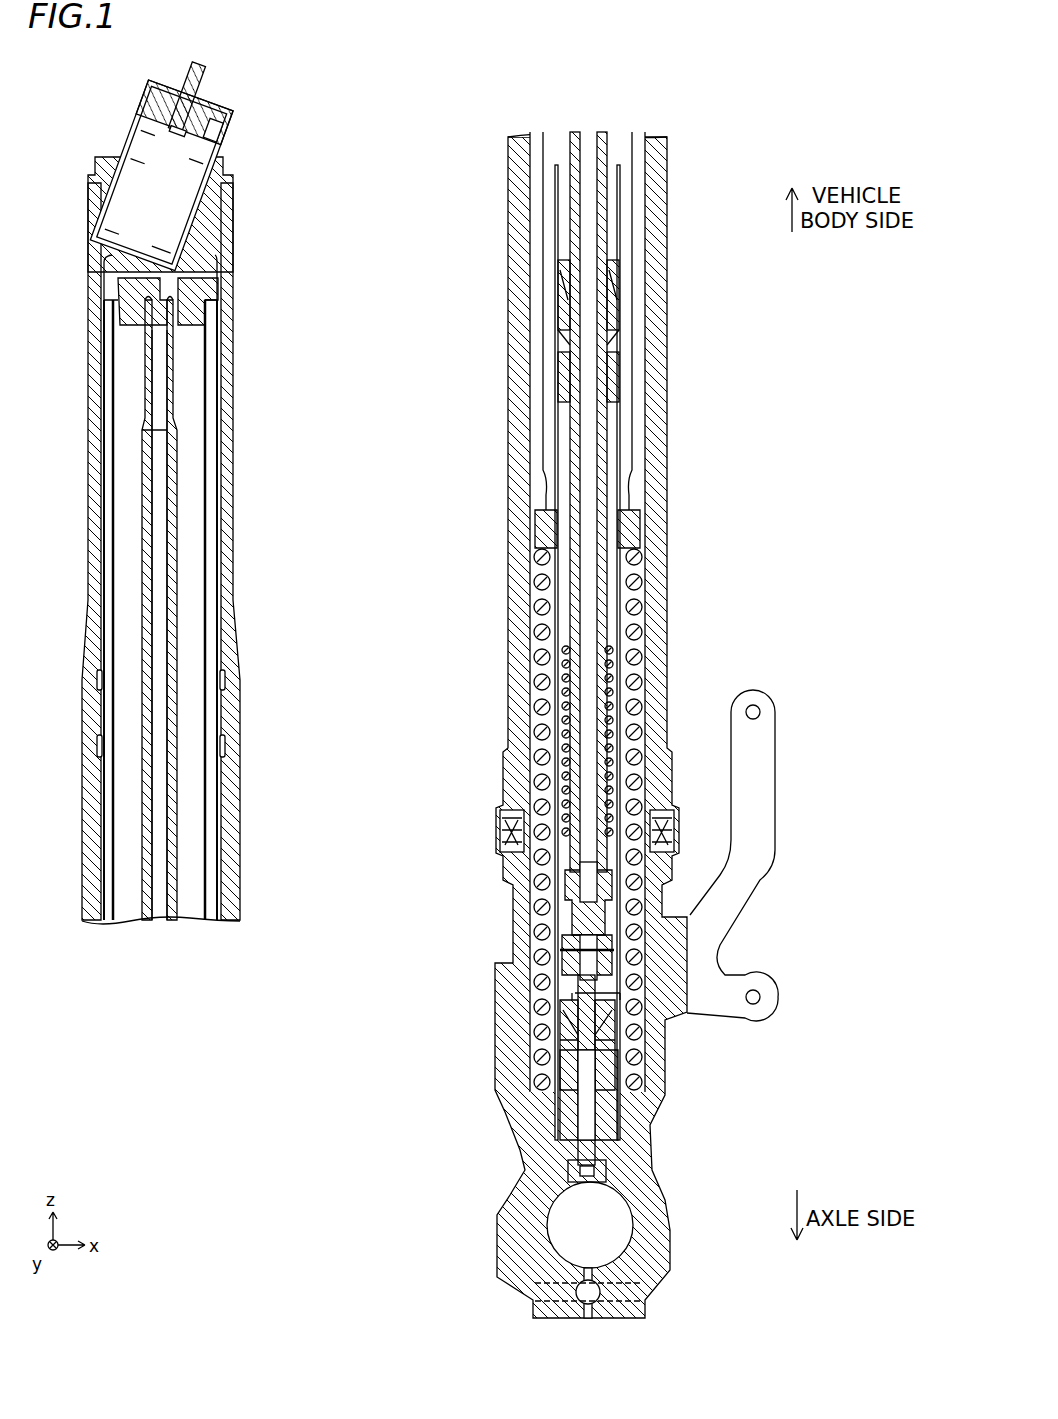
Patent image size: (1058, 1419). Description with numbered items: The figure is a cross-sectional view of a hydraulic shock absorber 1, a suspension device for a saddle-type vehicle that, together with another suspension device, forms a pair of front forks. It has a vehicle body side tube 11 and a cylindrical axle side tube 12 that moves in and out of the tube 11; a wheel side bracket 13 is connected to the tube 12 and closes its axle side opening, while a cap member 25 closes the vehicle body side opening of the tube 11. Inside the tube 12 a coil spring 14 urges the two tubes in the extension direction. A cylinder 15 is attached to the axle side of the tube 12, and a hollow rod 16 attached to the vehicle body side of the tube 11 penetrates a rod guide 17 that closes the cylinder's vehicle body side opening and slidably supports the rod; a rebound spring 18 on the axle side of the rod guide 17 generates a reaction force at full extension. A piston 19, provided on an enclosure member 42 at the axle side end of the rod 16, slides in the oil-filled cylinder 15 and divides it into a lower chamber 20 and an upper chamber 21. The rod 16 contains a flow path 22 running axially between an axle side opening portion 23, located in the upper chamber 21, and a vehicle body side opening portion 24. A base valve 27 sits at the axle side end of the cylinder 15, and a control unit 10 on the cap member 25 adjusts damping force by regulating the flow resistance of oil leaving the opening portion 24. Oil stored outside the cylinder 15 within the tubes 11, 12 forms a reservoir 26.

The hydraulic shock absorber 1 is at (777, 112).
The control unit 10 is at (112, 116).
The vehicle body side tube 11 is at (233, 512).
The axle side tube 12 is at (668, 918).
The wheel side bracket 13 is at (665, 1222).
The coil spring 14 is at (645, 620).
The cylinder 15 is at (620, 575).
The rod 16 is at (177, 437).
The rod guide 17 is at (617, 336).
The rebound spring 18 is at (608, 665).
The piston 19 is at (563, 942).
The lower chamber 20 is at (613, 958).
The upper chamber 21 is at (512, 848).
The flow path 22 is at (160, 472).
The axle side opening portion 23 is at (575, 878).
The vehicle body side opening portion 24 is at (178, 270).
The cap member 25 is at (210, 232).
The reservoir 26 is at (212, 400).
The base valve 27 is at (590, 1040).
The enclosure member 42 is at (600, 888).